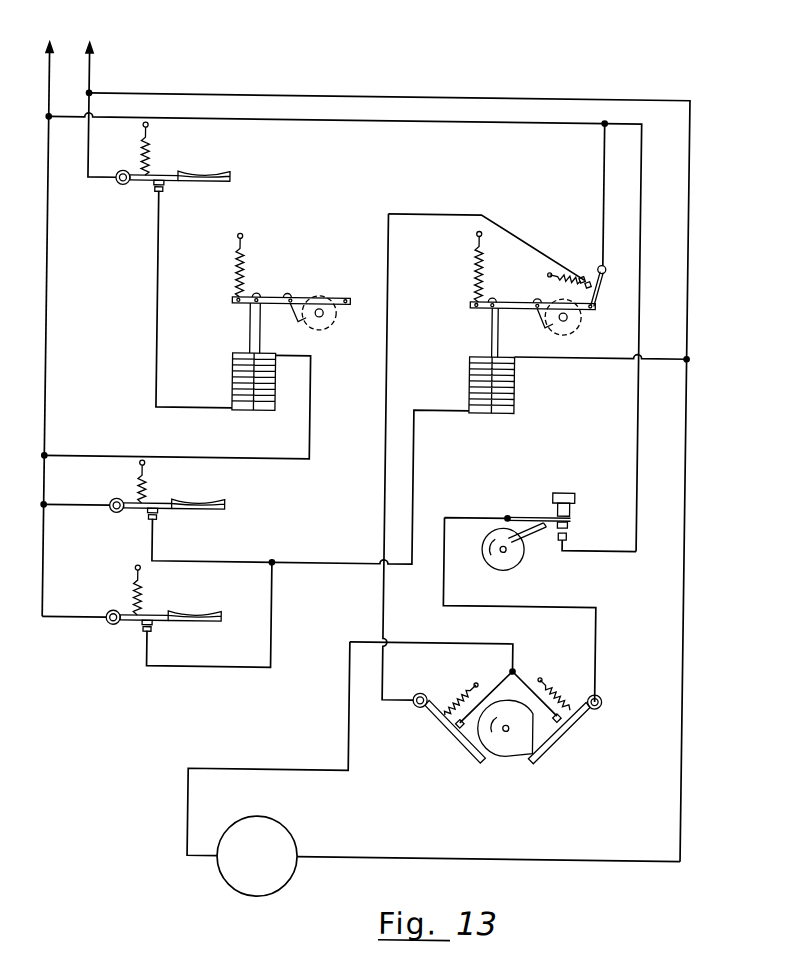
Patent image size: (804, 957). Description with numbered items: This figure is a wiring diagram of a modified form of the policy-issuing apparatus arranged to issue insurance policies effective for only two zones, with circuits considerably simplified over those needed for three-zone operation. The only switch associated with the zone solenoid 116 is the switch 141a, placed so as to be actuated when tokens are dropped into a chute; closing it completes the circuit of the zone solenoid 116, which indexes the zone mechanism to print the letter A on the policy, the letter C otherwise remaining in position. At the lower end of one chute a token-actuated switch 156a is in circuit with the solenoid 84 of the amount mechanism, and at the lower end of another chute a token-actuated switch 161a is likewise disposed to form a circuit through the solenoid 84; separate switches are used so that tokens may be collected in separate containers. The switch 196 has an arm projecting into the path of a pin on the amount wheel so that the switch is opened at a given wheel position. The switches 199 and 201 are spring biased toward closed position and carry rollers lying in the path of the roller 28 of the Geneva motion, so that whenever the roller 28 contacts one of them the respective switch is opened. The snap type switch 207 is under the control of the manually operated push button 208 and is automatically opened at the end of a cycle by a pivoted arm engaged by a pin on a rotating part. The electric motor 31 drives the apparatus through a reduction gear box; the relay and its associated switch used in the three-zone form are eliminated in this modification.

The switch 141a is at (163, 172).
The switch 156a is at (166, 498).
The token actuated switch 161a is at (164, 609).
The zone solenoid 116 is at (274, 386).
The solenoid of the amount mechanism 84 is at (513, 397).
The switch 196 is at (586, 262).
The snap type switch 207 is at (552, 534).
The push button 208 is at (568, 491).
The switch 199 is at (465, 737).
The switch 201 is at (570, 717).
The roller 28 is at (530, 752).
The electric motor 31 is at (299, 848).